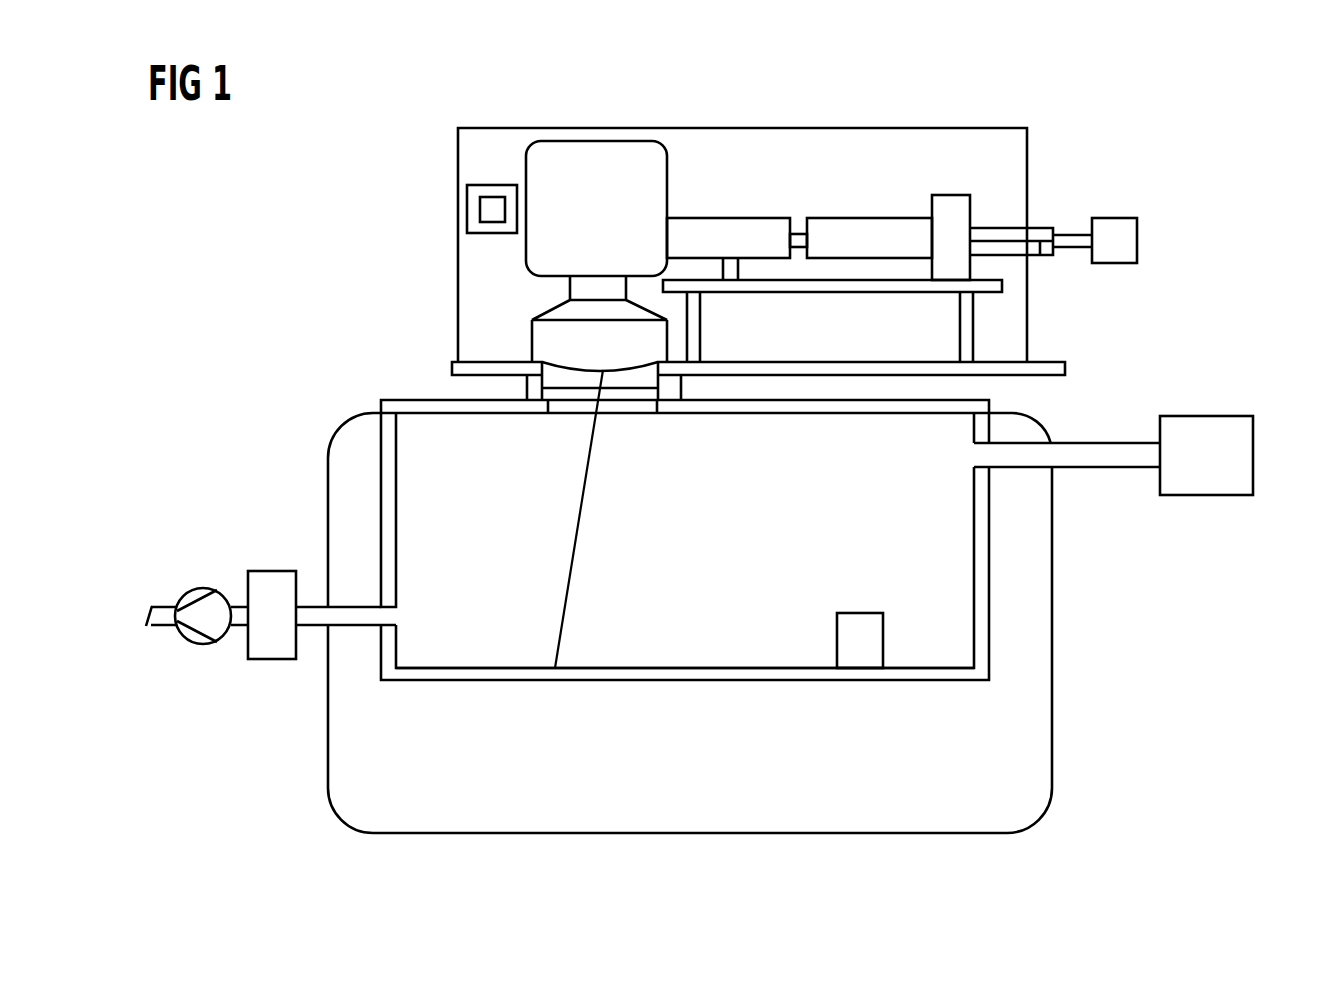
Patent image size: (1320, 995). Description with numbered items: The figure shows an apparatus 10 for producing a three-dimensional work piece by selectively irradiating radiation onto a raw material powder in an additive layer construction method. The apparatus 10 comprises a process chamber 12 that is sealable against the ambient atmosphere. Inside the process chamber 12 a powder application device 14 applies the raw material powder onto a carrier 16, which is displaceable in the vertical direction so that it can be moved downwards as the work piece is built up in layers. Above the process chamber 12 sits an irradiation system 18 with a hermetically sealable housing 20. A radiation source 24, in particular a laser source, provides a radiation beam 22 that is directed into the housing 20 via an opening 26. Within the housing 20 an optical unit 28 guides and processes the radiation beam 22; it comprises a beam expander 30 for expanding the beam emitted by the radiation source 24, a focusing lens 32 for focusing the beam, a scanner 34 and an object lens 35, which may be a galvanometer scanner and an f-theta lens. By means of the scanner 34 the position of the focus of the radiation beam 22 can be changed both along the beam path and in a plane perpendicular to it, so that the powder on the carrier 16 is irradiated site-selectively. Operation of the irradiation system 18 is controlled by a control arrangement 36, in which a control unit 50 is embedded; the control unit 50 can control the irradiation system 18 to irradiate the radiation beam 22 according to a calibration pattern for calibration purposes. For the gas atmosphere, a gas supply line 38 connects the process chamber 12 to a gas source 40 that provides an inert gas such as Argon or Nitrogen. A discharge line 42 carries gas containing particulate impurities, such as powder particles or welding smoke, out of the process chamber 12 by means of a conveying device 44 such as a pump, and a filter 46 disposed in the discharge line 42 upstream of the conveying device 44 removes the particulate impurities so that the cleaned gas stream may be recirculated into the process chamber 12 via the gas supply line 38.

The apparatus 10 is at (1160, 336).
The process chamber 12 is at (922, 655).
The powder application device 14 is at (858, 612).
The carrier 16 is at (685, 672).
The irradiation system 18 is at (1108, 180).
The housing 20 is at (755, 128).
The radiation beam 22 is at (1045, 258).
The radiation source 24 is at (1112, 266).
The opening 26 is at (1031, 228).
The optical unit 28 is at (828, 198).
The beam expander 30 is at (893, 228).
The focusing lens 32 is at (730, 228).
The scanner 34 is at (593, 162).
The object lens 35 is at (538, 343).
The control arrangement 36 is at (490, 234).
The gas supply line 38 is at (1097, 457).
The gas source 40 is at (1207, 497).
The discharge line 42 is at (362, 630).
The conveying device 44 is at (203, 588).
The filter 46 is at (270, 570).
The control unit 50 is at (490, 200).